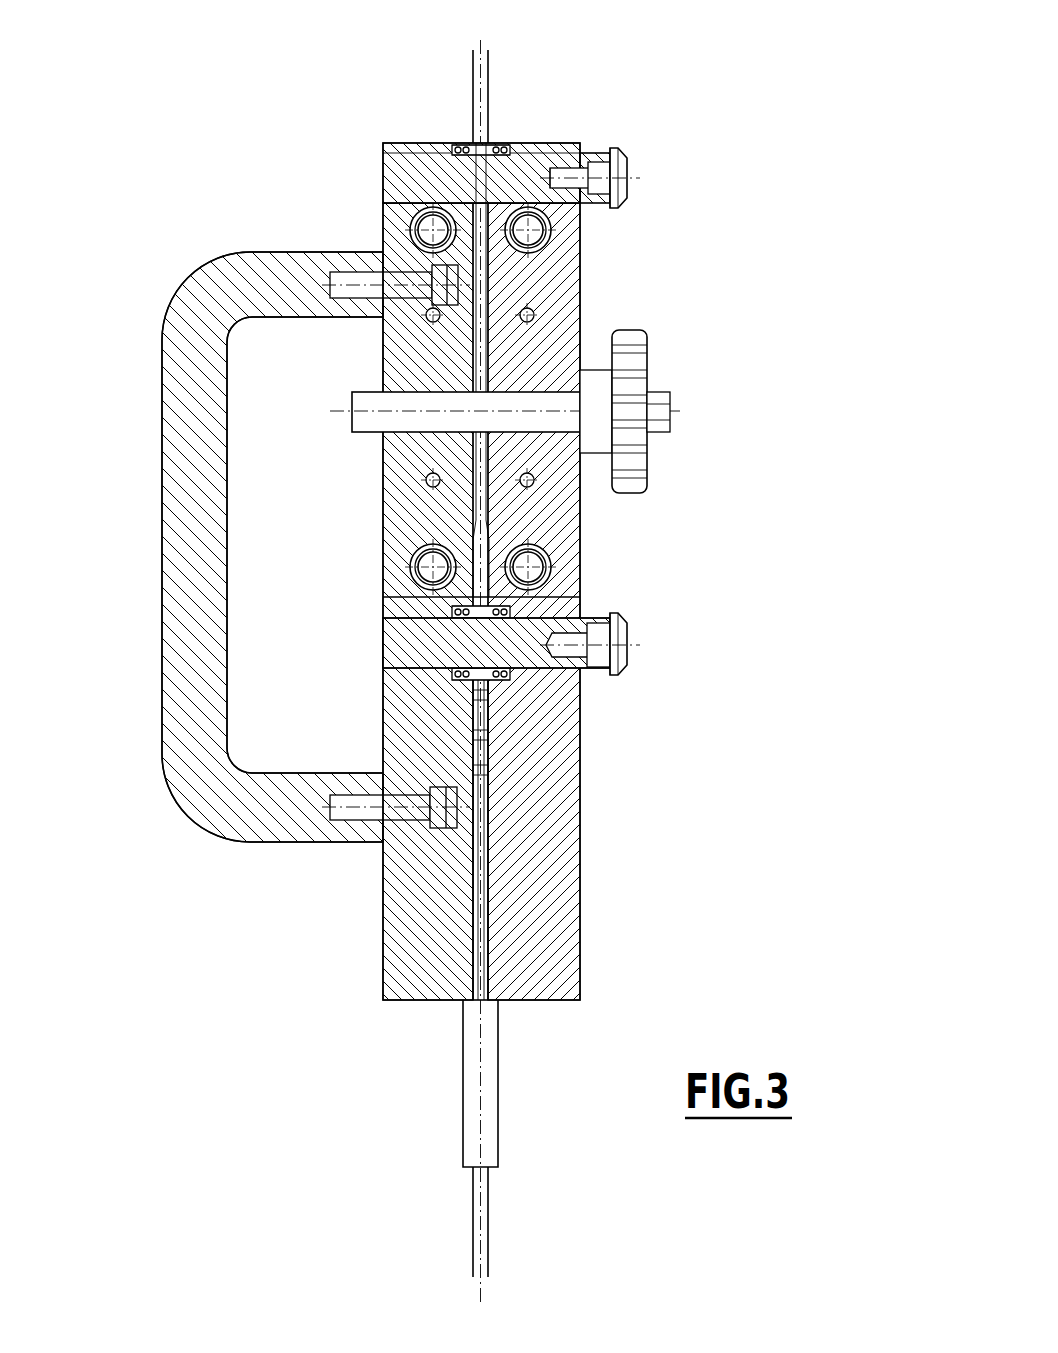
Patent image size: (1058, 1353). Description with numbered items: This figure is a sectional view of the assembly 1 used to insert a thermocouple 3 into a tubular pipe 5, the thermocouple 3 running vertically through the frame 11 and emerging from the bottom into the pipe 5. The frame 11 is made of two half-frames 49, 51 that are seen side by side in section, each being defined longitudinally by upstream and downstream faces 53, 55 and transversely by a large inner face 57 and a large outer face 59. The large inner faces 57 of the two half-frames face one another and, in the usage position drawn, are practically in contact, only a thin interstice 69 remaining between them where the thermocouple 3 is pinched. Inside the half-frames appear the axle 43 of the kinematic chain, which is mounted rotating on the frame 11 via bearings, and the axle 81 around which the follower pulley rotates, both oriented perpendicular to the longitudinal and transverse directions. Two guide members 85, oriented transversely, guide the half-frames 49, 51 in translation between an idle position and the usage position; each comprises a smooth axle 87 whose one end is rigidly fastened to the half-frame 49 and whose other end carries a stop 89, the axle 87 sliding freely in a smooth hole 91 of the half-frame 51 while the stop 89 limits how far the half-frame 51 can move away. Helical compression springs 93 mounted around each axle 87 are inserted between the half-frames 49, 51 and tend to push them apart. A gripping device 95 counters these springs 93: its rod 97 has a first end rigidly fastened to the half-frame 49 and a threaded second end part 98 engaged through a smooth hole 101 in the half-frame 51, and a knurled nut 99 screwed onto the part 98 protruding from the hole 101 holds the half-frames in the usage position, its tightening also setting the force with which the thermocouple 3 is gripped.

The assembly 1 is at (664, 80).
The thermocouple 3 is at (490, 64).
The tubular pipe 5 is at (470, 1121).
The frame 11 is at (336, 896).
The axle 43 is at (412, 242).
The half-frame 49 is at (400, 980).
The half-frame 51 is at (555, 900).
The upstream face 53 is at (428, 145).
The downstream face 55 is at (515, 1003).
The large inner face 57 is at (528, 875).
The large outer face 59 is at (383, 708).
The interstice 69 is at (492, 975).
The axle 81 is at (512, 587).
The guide member 85 is at (520, 160).
The smooth axle 87 is at (422, 152).
The stop 89 is at (628, 152).
The smooth hole 91 is at (562, 150).
The helical compression spring 93 is at (492, 145).
The gripping device 95 is at (690, 405).
The rod 97 is at (358, 428).
The second end part 98 is at (545, 428).
The knurled nut 99 is at (645, 359).
The smooth hole 101 is at (555, 362).